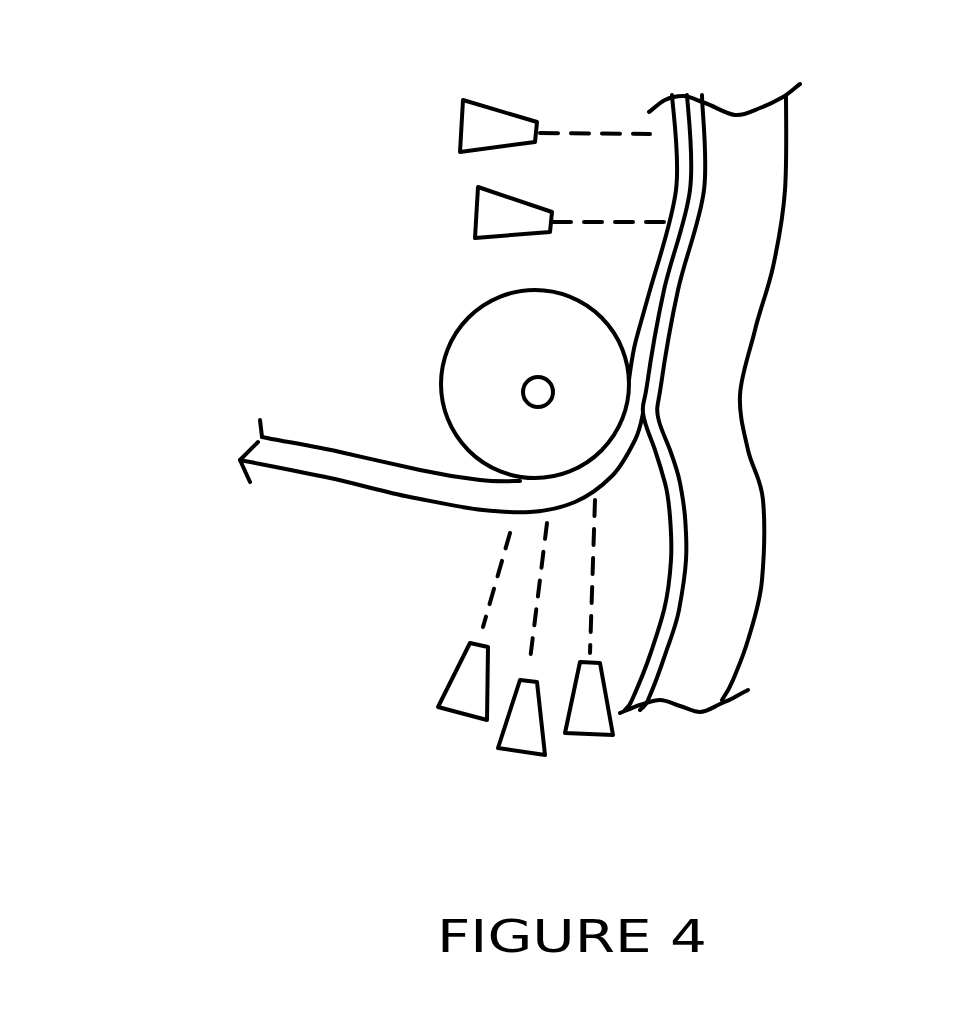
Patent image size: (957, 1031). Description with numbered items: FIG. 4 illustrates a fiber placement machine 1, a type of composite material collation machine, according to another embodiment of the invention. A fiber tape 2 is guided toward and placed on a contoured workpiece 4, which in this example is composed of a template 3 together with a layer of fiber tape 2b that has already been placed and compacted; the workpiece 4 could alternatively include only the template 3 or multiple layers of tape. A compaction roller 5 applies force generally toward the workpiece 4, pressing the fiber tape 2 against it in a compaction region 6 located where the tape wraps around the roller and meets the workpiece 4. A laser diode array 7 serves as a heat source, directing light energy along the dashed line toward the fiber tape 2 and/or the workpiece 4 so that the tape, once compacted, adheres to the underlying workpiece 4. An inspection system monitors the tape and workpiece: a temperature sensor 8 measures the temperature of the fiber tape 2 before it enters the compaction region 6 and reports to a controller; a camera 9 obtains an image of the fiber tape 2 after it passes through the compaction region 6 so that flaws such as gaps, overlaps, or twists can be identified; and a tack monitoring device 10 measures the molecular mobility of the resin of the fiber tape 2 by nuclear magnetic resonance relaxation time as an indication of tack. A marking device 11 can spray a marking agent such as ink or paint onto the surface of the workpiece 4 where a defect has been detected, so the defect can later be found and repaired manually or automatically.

The fiber placement machine 1 is at (143, 213).
The fiber tape 2 is at (320, 482).
The layer of fiber tape 2b is at (688, 130).
The template 3 is at (780, 487).
The workpiece 4 is at (703, 710).
The compaction roller 5 is at (453, 342).
The compaction region 6 is at (680, 308).
The laser diode array 7 is at (503, 753).
The temperature sensor 8 is at (590, 735).
The camera 9 is at (477, 208).
The tack monitoring device 10 is at (430, 688).
The marking device 11 is at (460, 125).